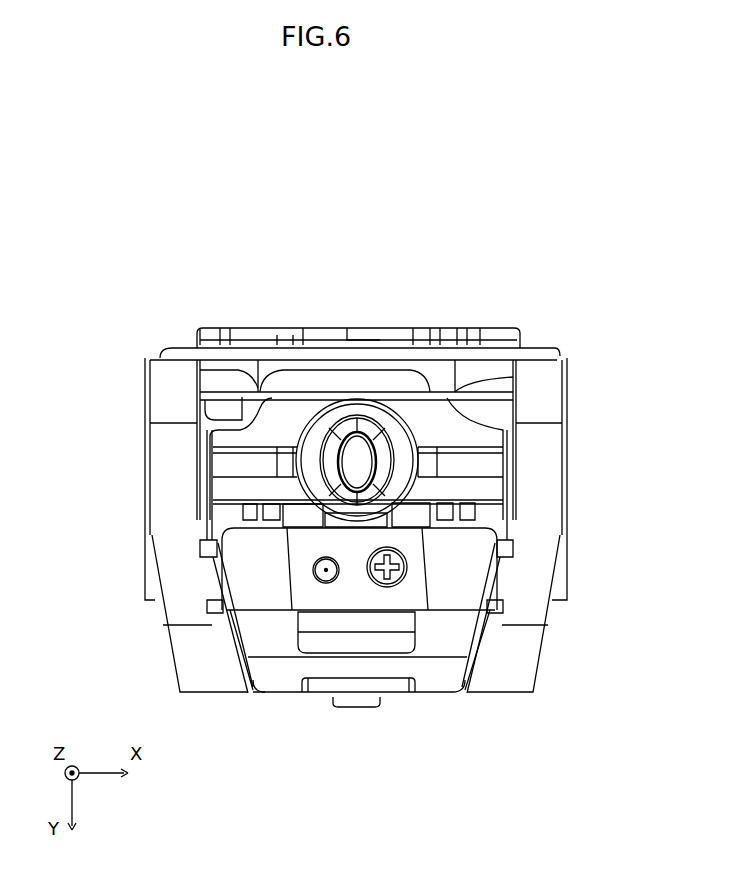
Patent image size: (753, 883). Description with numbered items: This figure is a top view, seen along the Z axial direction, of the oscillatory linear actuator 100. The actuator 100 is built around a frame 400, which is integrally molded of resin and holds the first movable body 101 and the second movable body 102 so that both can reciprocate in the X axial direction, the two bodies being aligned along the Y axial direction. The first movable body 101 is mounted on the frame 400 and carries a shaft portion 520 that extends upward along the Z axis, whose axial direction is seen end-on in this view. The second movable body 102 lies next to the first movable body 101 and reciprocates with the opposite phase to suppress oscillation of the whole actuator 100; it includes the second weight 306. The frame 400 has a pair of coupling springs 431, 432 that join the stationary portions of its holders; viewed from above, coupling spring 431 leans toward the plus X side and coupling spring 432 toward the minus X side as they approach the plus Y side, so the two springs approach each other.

The oscillatory linear actuator 100 is at (165, 302).
The frame 400 is at (572, 355).
The first movable body 101 is at (483, 407).
The second movable body 102 is at (480, 517).
The shaft portion 520 is at (350, 459).
The coupling spring 432 is at (163, 522).
The coupling spring 431 is at (543, 522).
The second weight 306 is at (480, 580).